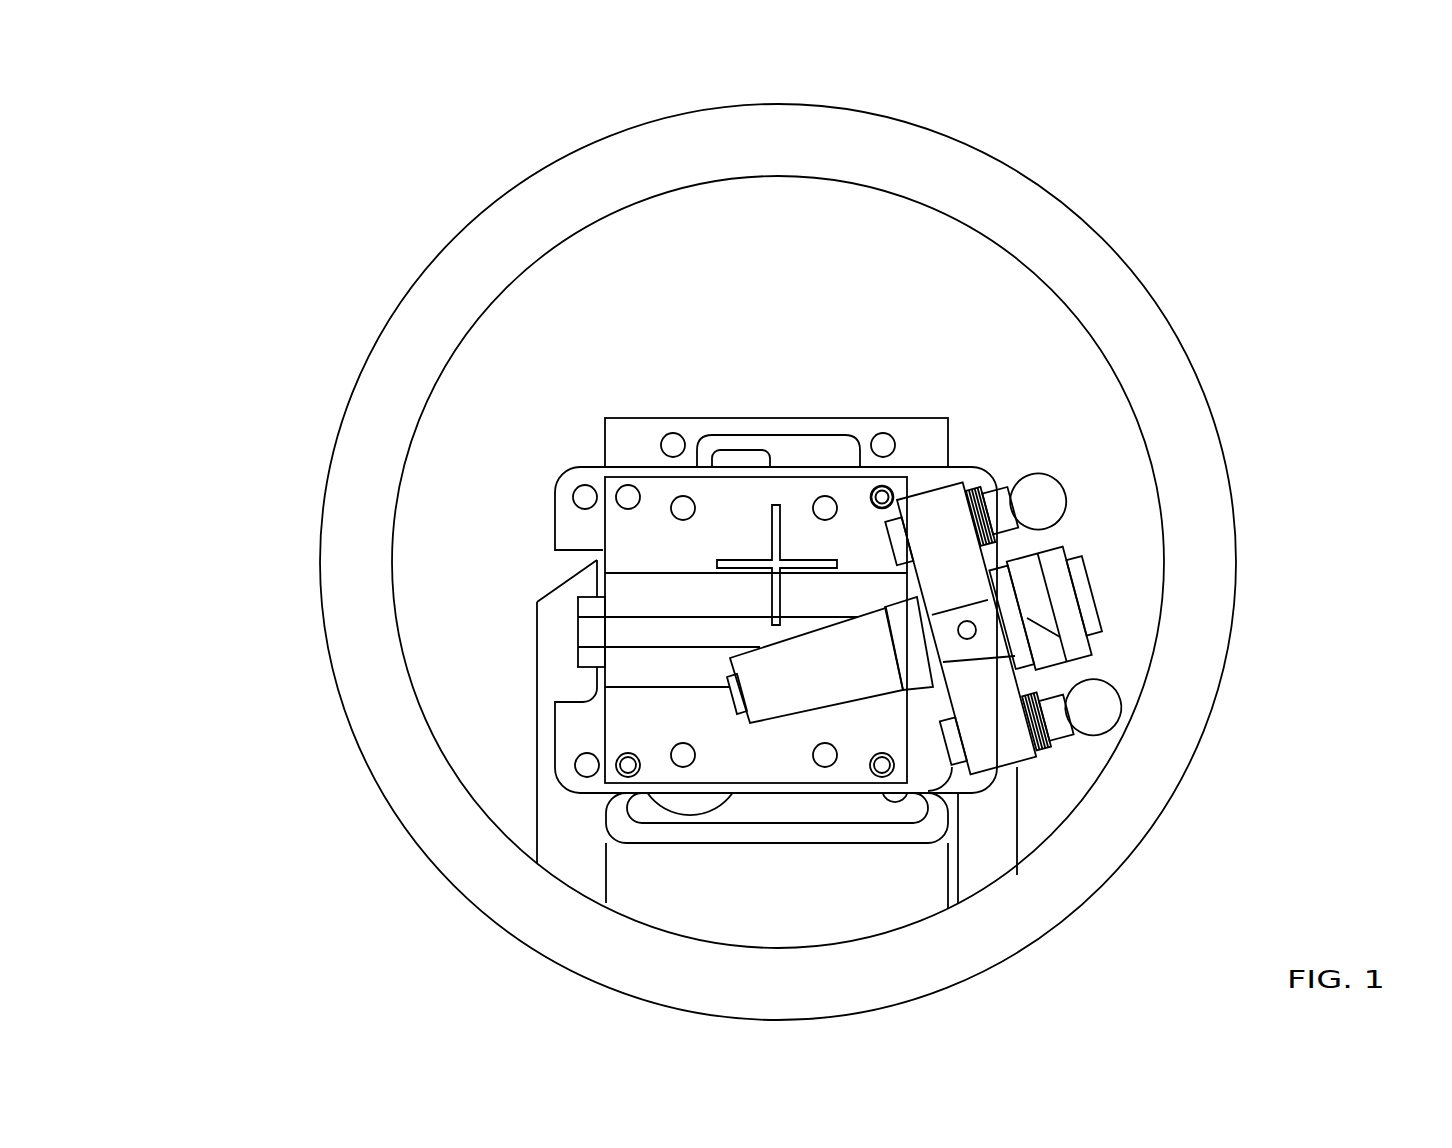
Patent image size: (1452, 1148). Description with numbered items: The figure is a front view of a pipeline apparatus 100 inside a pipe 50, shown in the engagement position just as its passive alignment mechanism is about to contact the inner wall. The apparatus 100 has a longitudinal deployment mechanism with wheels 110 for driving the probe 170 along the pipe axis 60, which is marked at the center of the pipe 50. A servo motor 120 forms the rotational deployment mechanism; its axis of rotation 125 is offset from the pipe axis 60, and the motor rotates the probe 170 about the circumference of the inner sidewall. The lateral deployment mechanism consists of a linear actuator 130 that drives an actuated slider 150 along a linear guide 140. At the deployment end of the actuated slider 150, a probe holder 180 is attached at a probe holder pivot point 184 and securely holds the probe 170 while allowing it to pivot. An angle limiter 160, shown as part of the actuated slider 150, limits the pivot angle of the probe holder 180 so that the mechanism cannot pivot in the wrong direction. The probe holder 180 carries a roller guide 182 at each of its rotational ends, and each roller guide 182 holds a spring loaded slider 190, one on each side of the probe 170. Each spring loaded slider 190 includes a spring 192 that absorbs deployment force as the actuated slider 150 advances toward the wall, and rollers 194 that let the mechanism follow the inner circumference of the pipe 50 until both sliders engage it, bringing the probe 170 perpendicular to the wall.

The pipeline apparatus 100 is at (207, 161).
The pipe 50 is at (500, 237).
The pipe axis 60 is at (772, 552).
The wheels 110 is at (562, 862).
The servo motor 120 is at (633, 445).
The axis of rotation 125 is at (752, 630).
The linear actuator 130 is at (590, 545).
The linear guide 140 is at (677, 593).
The actuated slider 150 is at (627, 630).
The angle limiter 160 is at (881, 486).
The probe 170 is at (1092, 591).
The probe holder 180 is at (967, 555).
The roller guide 182 is at (992, 730).
The probe holder pivot point 184 is at (967, 630).
The spring loaded slider 190 is at (948, 756).
The spring 192 is at (976, 488).
The rollers 194 is at (1053, 490).